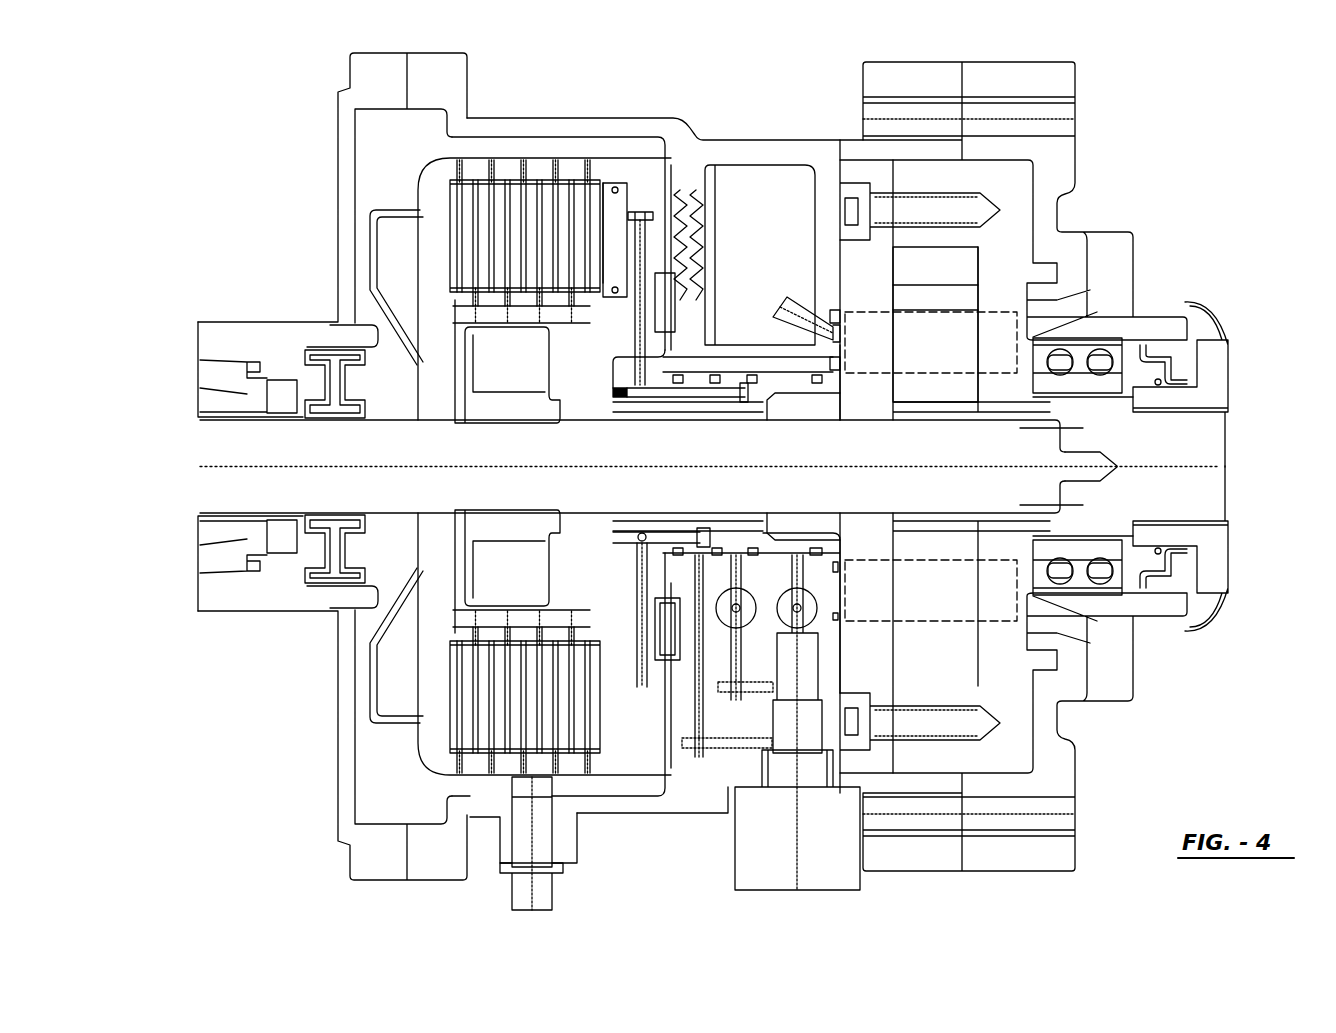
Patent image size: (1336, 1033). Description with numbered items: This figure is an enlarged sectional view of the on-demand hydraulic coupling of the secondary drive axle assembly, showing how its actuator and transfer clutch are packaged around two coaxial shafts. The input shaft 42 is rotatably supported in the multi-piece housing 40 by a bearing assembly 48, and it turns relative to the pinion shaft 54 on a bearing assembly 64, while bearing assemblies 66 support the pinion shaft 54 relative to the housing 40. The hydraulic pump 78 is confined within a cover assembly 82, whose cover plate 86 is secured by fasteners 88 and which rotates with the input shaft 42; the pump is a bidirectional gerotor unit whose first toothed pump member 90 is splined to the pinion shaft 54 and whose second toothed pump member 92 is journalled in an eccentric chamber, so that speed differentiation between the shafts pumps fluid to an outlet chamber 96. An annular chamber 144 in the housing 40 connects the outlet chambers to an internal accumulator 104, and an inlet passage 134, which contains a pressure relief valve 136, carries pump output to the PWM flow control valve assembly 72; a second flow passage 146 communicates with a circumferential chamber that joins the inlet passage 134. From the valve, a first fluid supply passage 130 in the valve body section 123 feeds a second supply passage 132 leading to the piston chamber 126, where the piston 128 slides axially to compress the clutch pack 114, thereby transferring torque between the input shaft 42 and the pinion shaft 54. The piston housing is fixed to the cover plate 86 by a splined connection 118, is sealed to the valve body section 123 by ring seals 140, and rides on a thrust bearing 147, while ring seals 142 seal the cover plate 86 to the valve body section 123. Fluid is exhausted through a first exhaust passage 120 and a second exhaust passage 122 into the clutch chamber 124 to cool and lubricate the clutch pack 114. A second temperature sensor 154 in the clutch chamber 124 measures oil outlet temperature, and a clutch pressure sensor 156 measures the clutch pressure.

The housing 40 is at (347, 757).
The input shaft 42 is at (1203, 442).
The bearing assembly 48 is at (1103, 362).
The pinion shaft 54 is at (388, 452).
The bearing assembly 64 is at (1057, 423).
The bearing assemblies 66 is at (215, 355).
The PWM flow control valve assembly 72 is at (753, 855).
The hydraulic pump 78 is at (944, 378).
The cover assembly 82 is at (1013, 466).
The cover plate 86 is at (866, 403).
The fasteners 88 is at (855, 195).
The first toothed pump member 90 is at (921, 365).
The second toothed pump member 92 is at (921, 277).
The outlet chamber 96 is at (877, 562).
The internal accumulator 104 is at (738, 230).
The clutch pack 114 is at (503, 234).
The splined connection 118 is at (813, 393).
The first exhaust passage 120 is at (655, 540).
The second exhaust passage 122 is at (702, 724).
The valve body section 123 is at (707, 790).
The clutch chamber 124 is at (526, 584).
The piston chamber 126 is at (628, 242).
The piston 128 is at (612, 232).
The first fluid supply passage 130 is at (737, 560).
The second supply passage 132 is at (663, 392).
The inlet passage 134 is at (797, 617).
The pressure relief valve 136 is at (785, 612).
The ring seals 140 is at (753, 378).
The ring seals 142 is at (836, 615).
The annular chamber 144 is at (838, 350).
The second flow passage 146 is at (793, 362).
The thrust bearing 147 is at (667, 640).
The second temperature sensor 154 is at (540, 890).
The clutch pressure sensor 156 is at (747, 604).